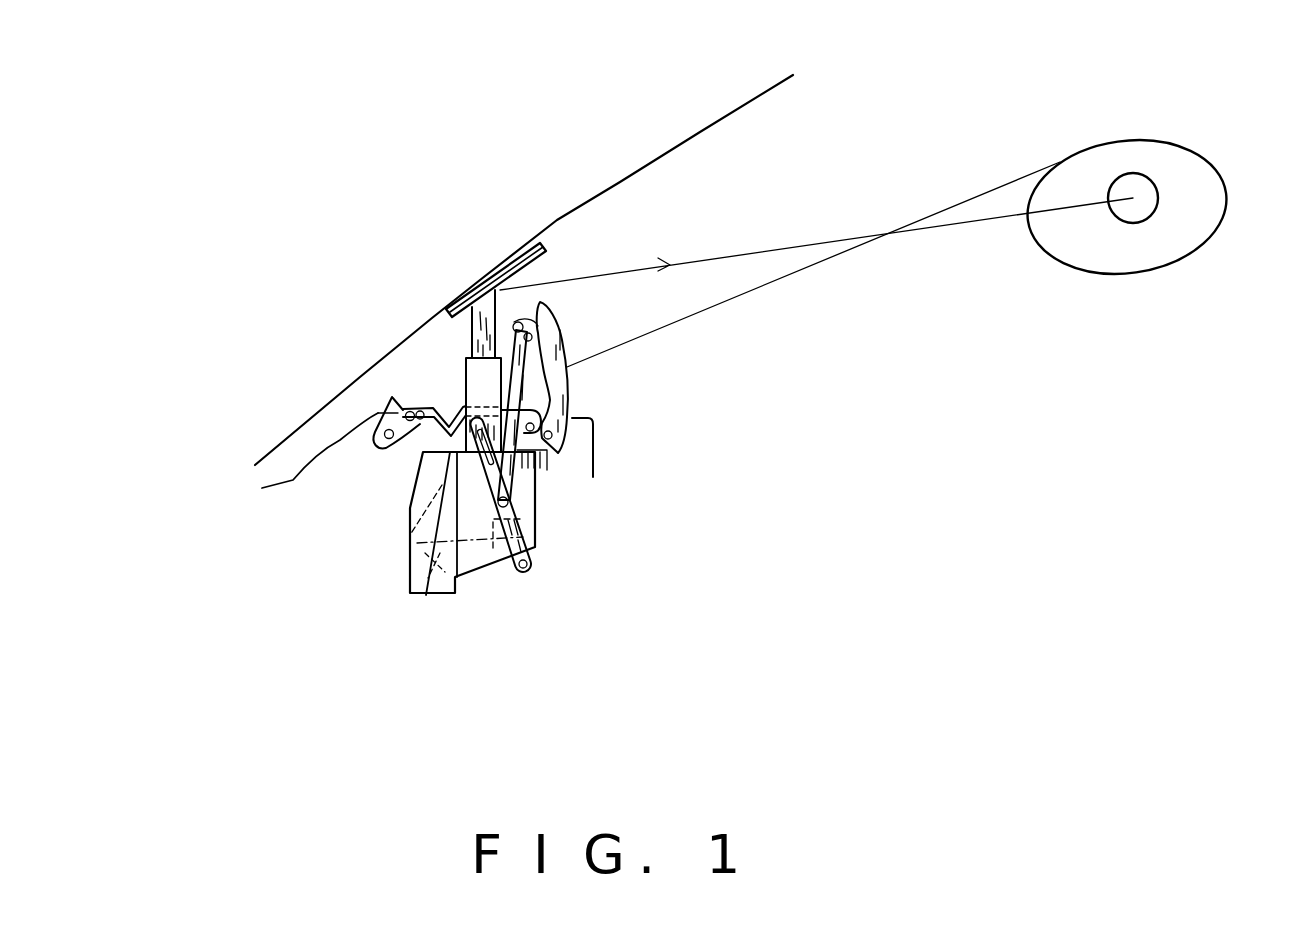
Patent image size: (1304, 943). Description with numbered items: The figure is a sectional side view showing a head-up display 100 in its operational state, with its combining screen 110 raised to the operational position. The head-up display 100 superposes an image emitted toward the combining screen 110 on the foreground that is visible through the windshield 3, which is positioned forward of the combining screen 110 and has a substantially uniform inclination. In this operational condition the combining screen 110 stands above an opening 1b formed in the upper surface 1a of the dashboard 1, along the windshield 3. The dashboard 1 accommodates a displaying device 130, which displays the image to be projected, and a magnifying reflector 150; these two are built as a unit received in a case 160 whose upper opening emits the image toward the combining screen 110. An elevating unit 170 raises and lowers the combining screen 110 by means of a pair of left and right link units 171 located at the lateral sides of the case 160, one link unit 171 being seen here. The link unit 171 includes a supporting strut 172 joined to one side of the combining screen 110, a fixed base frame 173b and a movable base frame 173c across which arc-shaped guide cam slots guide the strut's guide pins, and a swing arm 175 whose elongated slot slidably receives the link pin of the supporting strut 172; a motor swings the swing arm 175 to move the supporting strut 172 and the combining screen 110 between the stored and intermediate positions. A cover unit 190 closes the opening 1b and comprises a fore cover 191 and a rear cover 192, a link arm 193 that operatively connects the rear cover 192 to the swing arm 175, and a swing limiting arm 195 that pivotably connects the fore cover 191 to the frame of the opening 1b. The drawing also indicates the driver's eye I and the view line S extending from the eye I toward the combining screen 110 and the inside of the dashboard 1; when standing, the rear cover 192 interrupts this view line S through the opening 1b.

The dashboard 1 is at (602, 466).
The upper surface 1a is at (330, 440).
The opening 1b is at (462, 388).
The windshield 3 is at (753, 102).
The head-up display 100 is at (651, 609).
The combining screen 110 is at (533, 268).
The displaying device 130 is at (493, 553).
The magnifying reflector 150 is at (440, 560).
The case 160 is at (537, 497).
The elevating unit 170 is at (280, 622).
The link unit 171 is at (387, 532).
The supporting strut 172 is at (468, 335).
The fixed base frame 173b is at (410, 577).
The movable base frame 173c is at (438, 404).
The swing arm 175 is at (537, 548).
The cover unit 190 is at (604, 410).
The fore cover 191 is at (378, 412).
The rear cover 192 is at (570, 387).
The link arm 193 is at (570, 378).
The swing limiting arm 195 is at (440, 418).
The view line S is at (963, 200).
The driver's eye I is at (1147, 173).